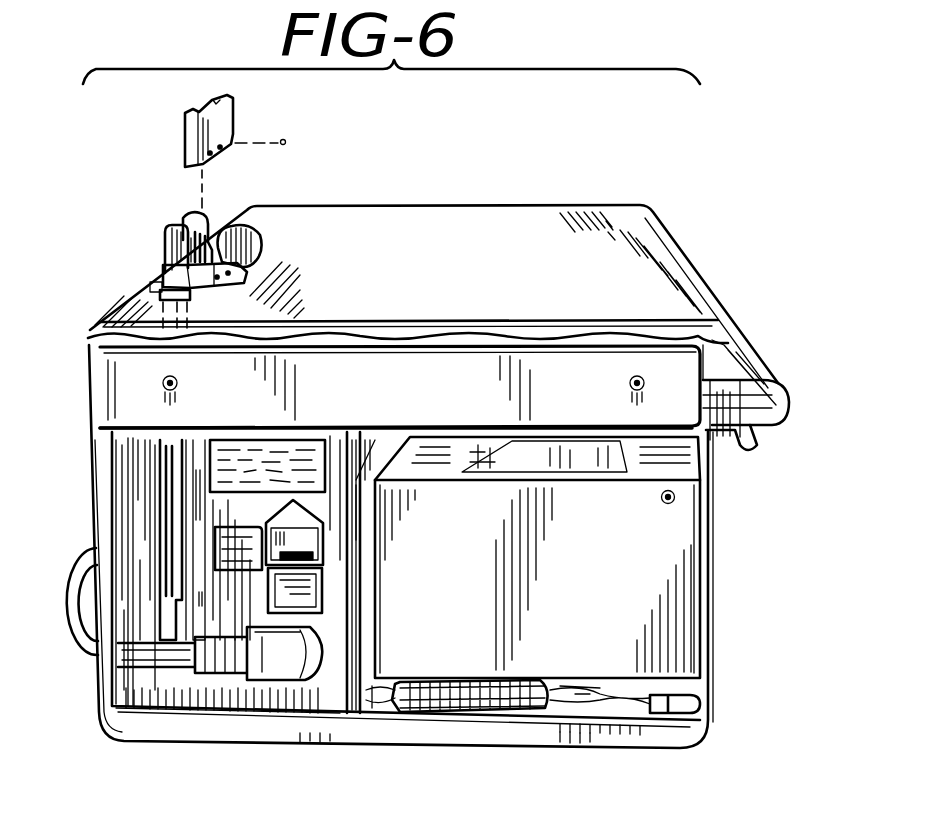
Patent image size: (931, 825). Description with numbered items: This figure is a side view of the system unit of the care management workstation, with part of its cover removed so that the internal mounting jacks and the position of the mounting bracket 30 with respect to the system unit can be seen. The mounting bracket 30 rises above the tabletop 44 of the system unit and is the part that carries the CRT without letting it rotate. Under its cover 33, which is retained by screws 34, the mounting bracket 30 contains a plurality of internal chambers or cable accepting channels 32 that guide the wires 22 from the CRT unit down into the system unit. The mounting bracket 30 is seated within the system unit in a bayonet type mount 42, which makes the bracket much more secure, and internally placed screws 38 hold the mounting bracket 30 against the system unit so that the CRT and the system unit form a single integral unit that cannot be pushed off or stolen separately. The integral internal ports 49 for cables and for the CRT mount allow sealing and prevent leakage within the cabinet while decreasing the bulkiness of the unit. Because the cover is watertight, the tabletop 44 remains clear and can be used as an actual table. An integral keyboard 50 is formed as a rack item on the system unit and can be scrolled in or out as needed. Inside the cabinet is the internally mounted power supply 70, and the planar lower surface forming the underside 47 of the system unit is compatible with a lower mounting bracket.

The wires 22 is at (237, 215).
The mounting bracket 30 is at (165, 250).
The cable accepting channels 32 is at (195, 222).
The cover 33 is at (223, 120).
The screws 34 is at (283, 146).
The internally placed screws 38 is at (190, 300).
The bayonet type mount 42 is at (157, 287).
The tabletop 44 is at (520, 228).
The underside 47 is at (515, 750).
The integral internal ports 49 is at (340, 620).
The integral keyboard 50 is at (775, 386).
The power supply 70 is at (658, 585).